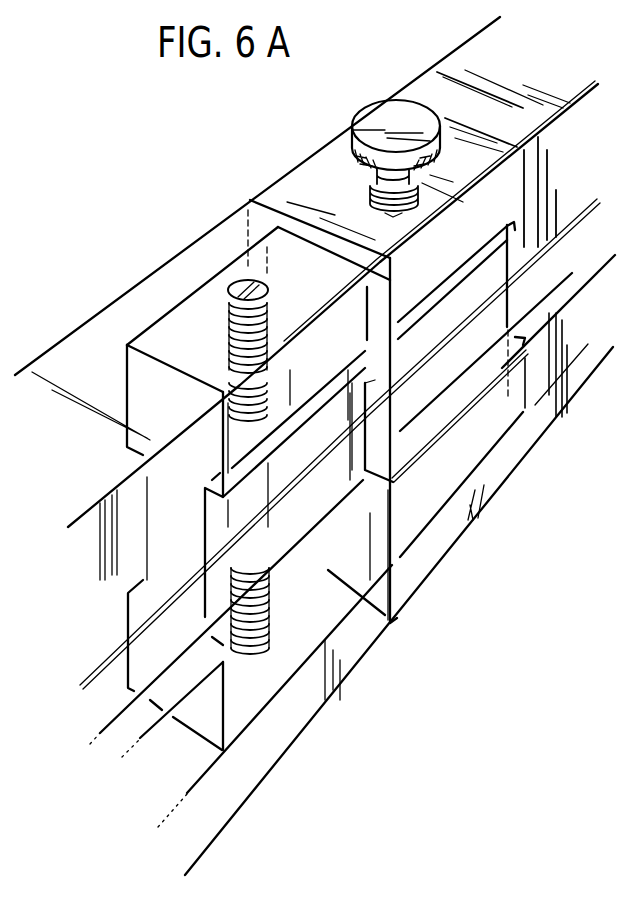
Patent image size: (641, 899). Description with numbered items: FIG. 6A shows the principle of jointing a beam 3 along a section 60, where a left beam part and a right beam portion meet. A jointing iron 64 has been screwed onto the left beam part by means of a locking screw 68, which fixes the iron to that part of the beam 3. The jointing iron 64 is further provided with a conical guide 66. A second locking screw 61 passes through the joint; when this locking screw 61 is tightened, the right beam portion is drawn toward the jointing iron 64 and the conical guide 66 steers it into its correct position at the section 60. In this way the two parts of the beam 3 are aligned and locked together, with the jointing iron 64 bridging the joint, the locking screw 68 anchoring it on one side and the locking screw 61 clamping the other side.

The beam 3 is at (47, 352).
The section 60 is at (267, 203).
The locking screw 61 is at (375, 125).
The jointing iron 64 is at (155, 337).
The conical guide 66 is at (370, 192).
The locking screw 68 is at (230, 282).